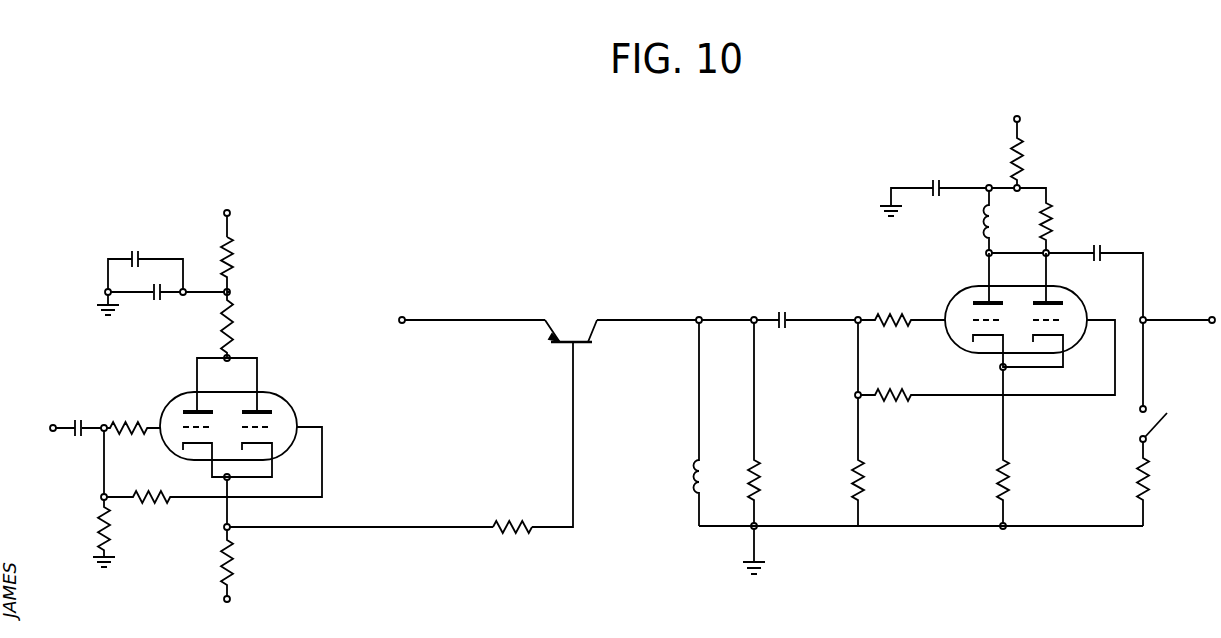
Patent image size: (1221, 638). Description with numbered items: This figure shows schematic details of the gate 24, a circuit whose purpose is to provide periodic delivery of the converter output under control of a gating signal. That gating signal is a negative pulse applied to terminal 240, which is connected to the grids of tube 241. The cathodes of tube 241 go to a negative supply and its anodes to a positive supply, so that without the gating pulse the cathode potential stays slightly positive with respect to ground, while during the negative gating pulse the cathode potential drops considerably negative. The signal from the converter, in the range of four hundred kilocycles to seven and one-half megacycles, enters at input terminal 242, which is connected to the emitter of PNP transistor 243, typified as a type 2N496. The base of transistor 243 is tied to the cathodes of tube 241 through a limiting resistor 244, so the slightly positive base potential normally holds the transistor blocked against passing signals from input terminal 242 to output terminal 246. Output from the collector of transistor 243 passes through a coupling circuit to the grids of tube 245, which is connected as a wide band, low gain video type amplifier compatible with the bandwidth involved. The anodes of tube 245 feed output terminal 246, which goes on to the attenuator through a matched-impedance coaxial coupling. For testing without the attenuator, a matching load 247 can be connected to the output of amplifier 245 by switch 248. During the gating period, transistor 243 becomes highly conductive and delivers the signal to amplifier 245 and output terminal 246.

The gate 24 is at (648, 614).
The terminal 240 is at (53, 431).
The tube 241 is at (281, 397).
The input terminal 242 is at (402, 323).
The PNP transistor 243 is at (592, 345).
The limiting resistor 244 is at (509, 505).
The tube 245 is at (963, 288).
The output terminal 246 is at (1212, 323).
The matching load 247 is at (1147, 496).
The switch 248 is at (1156, 426).